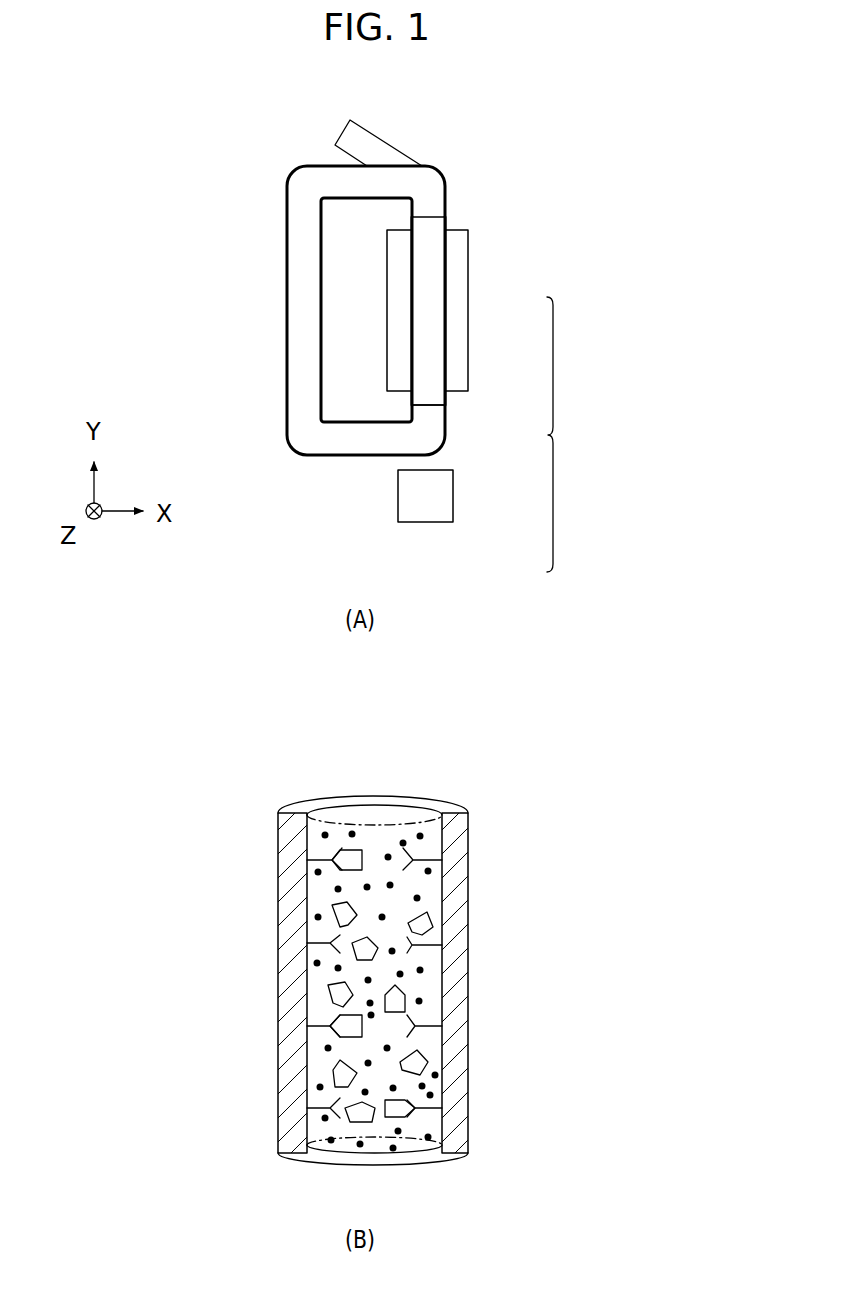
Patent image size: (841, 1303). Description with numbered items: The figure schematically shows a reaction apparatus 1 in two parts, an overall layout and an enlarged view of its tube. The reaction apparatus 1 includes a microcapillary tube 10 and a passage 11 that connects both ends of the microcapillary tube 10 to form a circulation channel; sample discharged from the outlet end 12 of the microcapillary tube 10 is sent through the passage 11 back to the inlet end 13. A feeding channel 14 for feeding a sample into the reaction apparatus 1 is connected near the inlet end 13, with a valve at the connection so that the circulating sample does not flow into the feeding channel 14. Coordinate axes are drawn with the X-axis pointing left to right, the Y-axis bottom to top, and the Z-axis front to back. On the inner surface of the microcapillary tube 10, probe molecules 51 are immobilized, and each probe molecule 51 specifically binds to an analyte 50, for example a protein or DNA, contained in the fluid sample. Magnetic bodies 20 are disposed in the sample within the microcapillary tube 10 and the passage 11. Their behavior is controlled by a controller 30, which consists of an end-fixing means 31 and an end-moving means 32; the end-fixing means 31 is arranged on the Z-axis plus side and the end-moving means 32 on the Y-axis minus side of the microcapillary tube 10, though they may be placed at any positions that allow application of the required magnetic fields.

The reaction apparatus 1 is at (630, 146).
The microcapillary tube 10 is at (445, 287).
The passage 11 is at (287, 302).
The outlet end 12 is at (432, 405).
The inlet end 13 is at (428, 215).
The feeding channel 14 is at (388, 140).
The magnetic bodies 20 is at (417, 898).
The controller 30 is at (487, 401).
The end-fixing means 31 is at (470, 332).
The end-moving means 32 is at (445, 524).
The analyte 50 is at (433, 927).
The probe molecule 51 is at (330, 943).